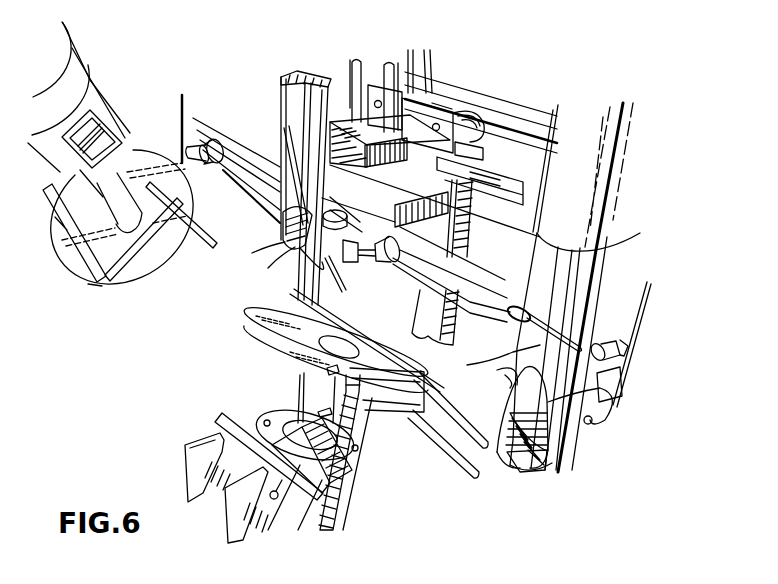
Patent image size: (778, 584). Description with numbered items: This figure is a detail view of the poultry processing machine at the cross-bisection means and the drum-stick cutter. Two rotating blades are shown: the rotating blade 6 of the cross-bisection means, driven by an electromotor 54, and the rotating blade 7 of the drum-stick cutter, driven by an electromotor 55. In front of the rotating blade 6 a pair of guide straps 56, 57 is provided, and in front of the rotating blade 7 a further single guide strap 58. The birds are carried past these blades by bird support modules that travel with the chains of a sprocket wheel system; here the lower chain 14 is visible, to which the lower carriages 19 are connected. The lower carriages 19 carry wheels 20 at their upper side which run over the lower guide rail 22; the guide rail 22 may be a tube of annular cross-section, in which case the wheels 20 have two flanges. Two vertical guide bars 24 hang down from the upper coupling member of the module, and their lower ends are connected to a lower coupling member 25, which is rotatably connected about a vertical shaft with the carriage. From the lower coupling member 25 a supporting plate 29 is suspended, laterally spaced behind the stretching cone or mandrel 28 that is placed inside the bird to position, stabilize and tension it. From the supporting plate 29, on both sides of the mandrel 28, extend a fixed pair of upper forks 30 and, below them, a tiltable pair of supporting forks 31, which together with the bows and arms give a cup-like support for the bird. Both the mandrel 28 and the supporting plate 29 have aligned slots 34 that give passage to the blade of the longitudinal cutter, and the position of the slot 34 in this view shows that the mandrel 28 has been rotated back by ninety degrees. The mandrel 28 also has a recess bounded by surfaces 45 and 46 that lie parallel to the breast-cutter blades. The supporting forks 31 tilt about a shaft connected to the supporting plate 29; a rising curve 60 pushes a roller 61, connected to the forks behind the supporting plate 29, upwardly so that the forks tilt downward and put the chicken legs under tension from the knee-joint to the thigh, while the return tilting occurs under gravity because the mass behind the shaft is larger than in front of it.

The rotating blade 6 is at (248, 330).
The rotating blade 7 is at (140, 257).
The lower chain 14 is at (503, 205).
The lower carriage 19 is at (487, 137).
The wheel 20 is at (453, 111).
The lower guide rail 22 is at (522, 114).
The vertical guide bar 24 is at (386, 64).
The lower coupling member 25 is at (347, 127).
The stretching cone or mandrel 28 is at (295, 102).
The supporting plate 29 is at (360, 170).
The upper fork 30 is at (262, 173).
The supporting fork 31 is at (347, 283).
The slot 34 is at (283, 215).
The surface 45 is at (555, 413).
The surface 46 is at (543, 414).
The electromotor 54 is at (350, 470).
The electromotor 55 is at (101, 108).
The guide strap 56 is at (466, 398).
The guide strap 57 is at (440, 433).
The guide strap 58 is at (205, 217).
The rising curve 60 is at (481, 305).
The roller 61 is at (396, 266).